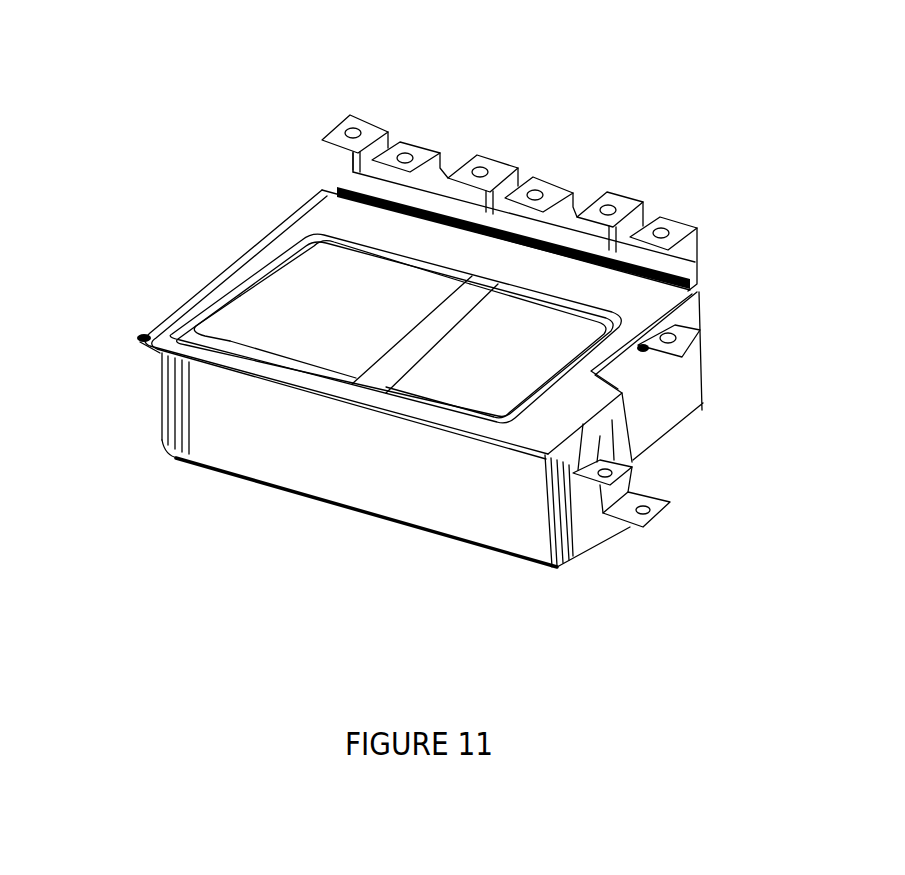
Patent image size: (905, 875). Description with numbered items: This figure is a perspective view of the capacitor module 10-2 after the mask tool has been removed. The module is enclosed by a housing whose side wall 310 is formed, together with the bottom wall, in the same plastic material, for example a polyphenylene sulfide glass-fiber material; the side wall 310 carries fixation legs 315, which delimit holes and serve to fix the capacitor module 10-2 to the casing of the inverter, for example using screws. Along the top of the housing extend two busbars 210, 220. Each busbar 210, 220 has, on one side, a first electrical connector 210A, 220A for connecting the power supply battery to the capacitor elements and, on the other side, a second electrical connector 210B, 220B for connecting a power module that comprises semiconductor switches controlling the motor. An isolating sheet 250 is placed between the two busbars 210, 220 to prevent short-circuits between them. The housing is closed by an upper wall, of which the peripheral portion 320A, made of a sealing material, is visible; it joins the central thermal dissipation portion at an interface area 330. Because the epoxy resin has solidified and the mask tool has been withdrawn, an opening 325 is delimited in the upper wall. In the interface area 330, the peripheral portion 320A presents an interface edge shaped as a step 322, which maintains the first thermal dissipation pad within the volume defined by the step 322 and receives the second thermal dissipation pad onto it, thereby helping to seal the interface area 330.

The capacitor module 10-2 is at (220, 100).
The busbar 210 is at (320, 283).
The first electrical connector 210A is at (600, 488).
The second electrical connector 210B is at (374, 124).
The busbar 220 is at (553, 357).
The first electrical connector 220A is at (663, 512).
The second electrical connector 220B is at (418, 158).
The isolating sheet 250 is at (373, 377).
The side wall 310 is at (463, 508).
The fixation legs 315 is at (143, 347).
The peripheral portion 320A is at (330, 214).
The step 322 is at (252, 287).
The opening 325 is at (278, 355).
The interface area 330 is at (203, 307).